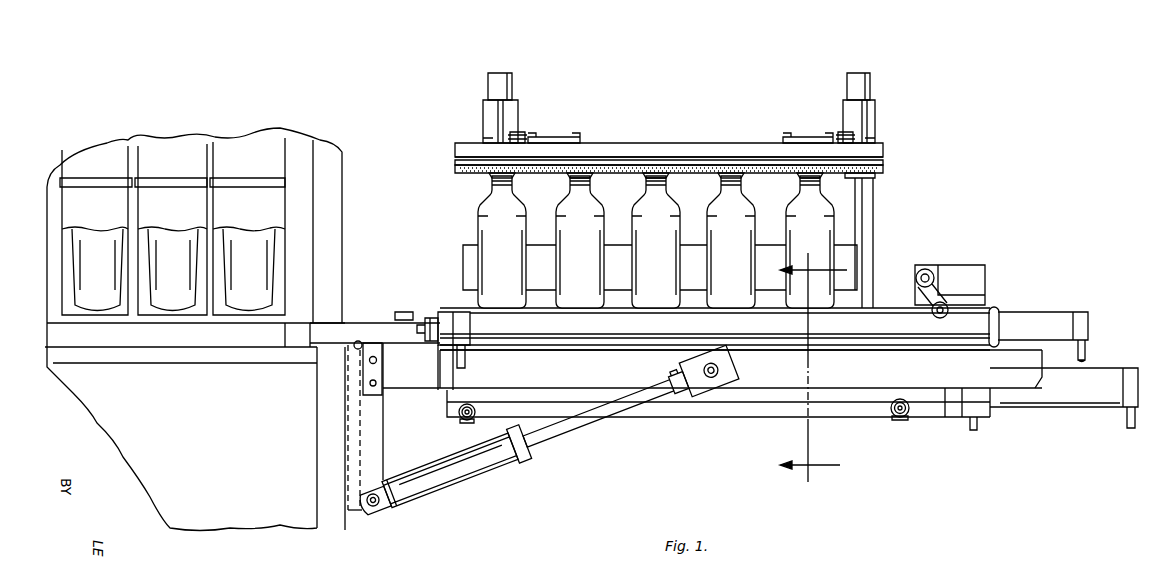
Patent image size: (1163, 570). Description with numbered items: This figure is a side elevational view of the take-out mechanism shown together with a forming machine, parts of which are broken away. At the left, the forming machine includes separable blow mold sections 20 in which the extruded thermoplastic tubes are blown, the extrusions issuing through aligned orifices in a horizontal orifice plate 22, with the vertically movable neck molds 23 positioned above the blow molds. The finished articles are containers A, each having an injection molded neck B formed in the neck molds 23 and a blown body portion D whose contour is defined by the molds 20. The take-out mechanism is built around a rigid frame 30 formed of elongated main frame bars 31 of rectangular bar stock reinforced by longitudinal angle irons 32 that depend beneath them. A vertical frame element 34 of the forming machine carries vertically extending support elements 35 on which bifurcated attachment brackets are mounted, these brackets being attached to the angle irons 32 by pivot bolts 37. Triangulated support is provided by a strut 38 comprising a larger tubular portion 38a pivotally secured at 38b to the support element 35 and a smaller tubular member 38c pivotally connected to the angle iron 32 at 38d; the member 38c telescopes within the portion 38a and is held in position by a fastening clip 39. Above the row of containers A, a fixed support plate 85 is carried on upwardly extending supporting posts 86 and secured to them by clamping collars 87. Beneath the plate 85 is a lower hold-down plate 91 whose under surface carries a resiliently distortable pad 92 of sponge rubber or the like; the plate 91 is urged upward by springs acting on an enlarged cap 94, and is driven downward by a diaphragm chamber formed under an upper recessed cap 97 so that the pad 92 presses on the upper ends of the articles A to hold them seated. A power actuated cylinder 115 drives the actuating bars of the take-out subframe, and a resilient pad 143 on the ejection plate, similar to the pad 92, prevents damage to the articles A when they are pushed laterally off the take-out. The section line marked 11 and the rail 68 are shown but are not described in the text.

The section line 11 is at (801, 367).
The blow mold sections 20 is at (297, 244).
The orifice plate 22 is at (206, 341).
The neck molds 23 is at (281, 178).
The rigid frame 30 is at (362, 330).
The main frame bar 31 is at (386, 327).
The angle iron 32 is at (410, 383).
The vertical frame element 34 is at (342, 520).
The support element 35 is at (381, 445).
The pivot bolt 37 is at (380, 361).
The strut 38 is at (455, 483).
The tubular portion 38a is at (459, 487).
The pivot 38b is at (376, 512).
The tubular member 38c is at (602, 417).
The pivot connection 38d is at (728, 369).
The fastening clip 39 is at (534, 449).
The rail 68 is at (763, 362).
The support plate 85 is at (884, 150).
The supporting post 86 is at (488, 84).
The clamping collar 87 is at (483, 115).
The hold-down plate 91 is at (707, 160).
The resiliently distortable pad 92 is at (884, 168).
The cap 94 is at (520, 133).
The recessed cap 97 is at (558, 137).
The power actuated cylinder 115 is at (1069, 398).
The resilient pad 143 is at (612, 260).
The container A is at (478, 208).
The neck B is at (645, 178).
The body portion D is at (480, 232).